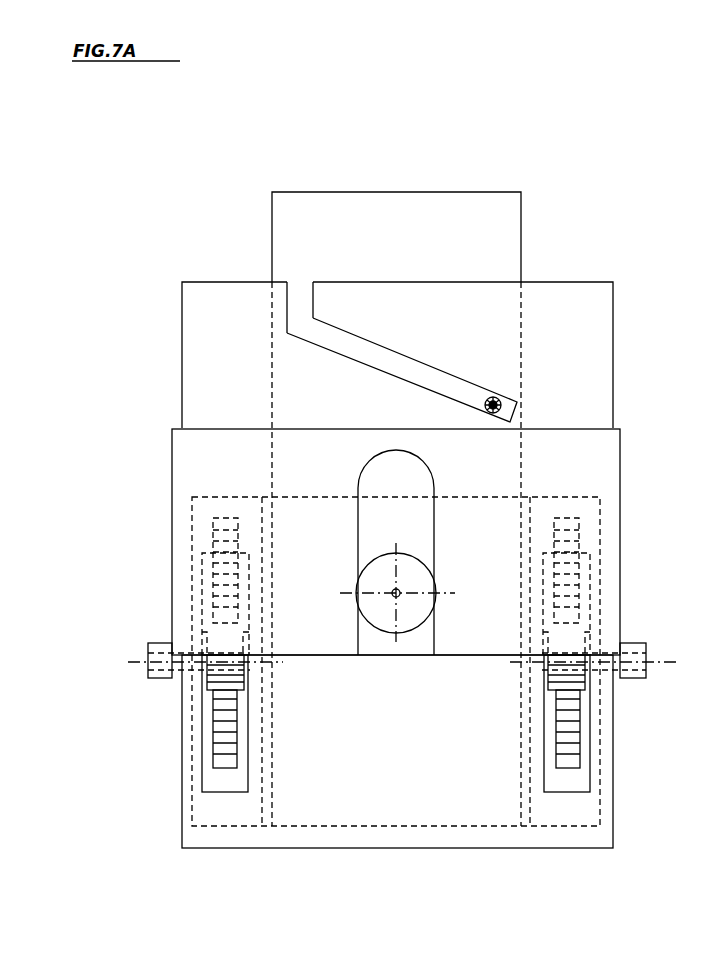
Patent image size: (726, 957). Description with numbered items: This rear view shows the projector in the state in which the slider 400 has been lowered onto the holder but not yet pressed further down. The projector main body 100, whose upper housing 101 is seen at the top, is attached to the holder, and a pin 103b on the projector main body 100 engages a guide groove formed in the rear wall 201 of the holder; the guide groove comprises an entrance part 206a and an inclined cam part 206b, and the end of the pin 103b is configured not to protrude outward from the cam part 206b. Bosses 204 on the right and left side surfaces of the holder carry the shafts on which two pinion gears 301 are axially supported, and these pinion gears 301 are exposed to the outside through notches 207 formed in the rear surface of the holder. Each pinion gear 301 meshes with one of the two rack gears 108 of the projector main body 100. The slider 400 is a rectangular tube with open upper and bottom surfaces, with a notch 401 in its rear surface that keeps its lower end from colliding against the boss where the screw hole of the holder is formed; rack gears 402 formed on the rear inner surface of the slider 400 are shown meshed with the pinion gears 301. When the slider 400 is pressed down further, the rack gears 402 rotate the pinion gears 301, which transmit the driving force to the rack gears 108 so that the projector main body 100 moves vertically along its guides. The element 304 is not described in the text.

The projector main body 100 is at (260, 227).
The upper housing 101 is at (456, 204).
The wall 201 is at (613, 318).
The entrance part 206a is at (302, 279).
The cam part 206b is at (386, 358).
The pin 103b is at (504, 396).
The slider 400 is at (615, 460).
The notch 401 is at (400, 508).
The shaft hole 304 is at (408, 581).
The rack gears 402 is at (225, 535).
The bosses 204 is at (162, 643).
The notches 207 is at (218, 783).
The pinion gears 301 is at (218, 688).
The rack gears 108 is at (230, 733).